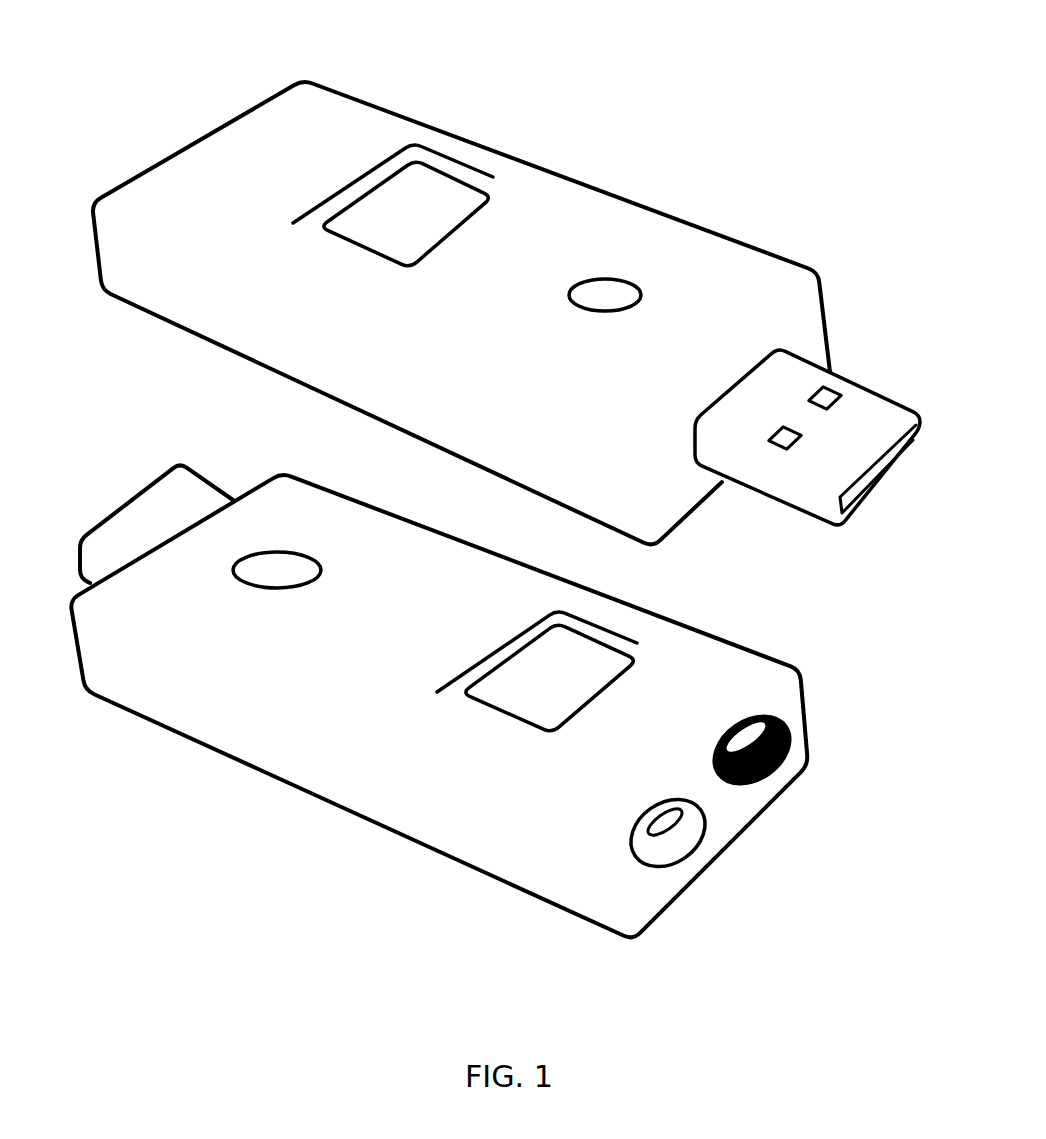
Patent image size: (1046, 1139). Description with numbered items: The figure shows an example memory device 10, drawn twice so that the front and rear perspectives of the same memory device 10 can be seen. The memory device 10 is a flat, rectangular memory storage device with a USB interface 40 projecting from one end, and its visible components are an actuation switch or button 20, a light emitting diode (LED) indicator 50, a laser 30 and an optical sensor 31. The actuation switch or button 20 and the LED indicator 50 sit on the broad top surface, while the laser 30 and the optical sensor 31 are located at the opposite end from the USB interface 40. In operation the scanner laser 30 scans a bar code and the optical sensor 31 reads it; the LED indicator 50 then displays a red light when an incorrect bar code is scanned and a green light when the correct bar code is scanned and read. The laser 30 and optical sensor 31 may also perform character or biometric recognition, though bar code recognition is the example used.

The memory device 10 is at (687, 292).
The actuation switch or button 20 is at (382, 217).
The laser 30 is at (677, 833).
The optical sensor 31 is at (772, 772).
The USB interface 40 is at (782, 473).
The light emitting diode (LED) indicator 50 is at (612, 293).